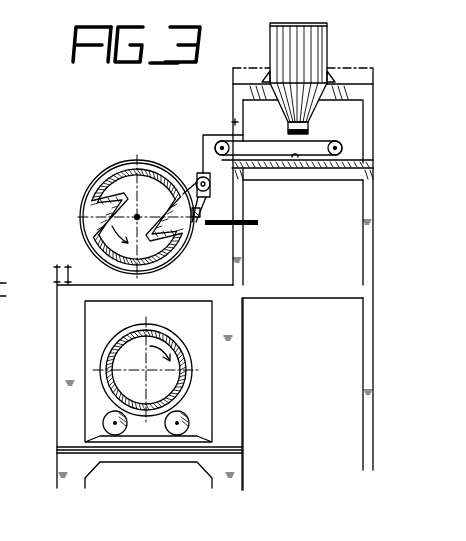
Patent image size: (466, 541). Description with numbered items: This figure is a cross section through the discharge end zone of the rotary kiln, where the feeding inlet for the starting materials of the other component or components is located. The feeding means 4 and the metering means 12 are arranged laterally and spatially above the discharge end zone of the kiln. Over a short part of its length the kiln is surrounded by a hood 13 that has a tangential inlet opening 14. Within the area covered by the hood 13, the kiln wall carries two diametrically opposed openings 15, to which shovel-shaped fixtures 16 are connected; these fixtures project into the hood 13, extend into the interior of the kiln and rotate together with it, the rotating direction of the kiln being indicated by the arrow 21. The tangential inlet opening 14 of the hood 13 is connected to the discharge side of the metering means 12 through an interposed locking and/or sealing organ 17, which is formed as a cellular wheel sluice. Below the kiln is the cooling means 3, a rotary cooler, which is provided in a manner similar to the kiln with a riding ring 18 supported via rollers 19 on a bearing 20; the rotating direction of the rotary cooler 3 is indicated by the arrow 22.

The cooling means 3 is at (105, 353).
The feeding means 4 is at (330, 50).
The metering means 12 is at (319, 142).
The hood 13 is at (117, 163).
The tangential inlet opening 14 is at (199, 224).
The openings 15 is at (104, 198).
The shovel-shaped fixtures 16 is at (93, 245).
The locking and/or sealing organ 17 is at (198, 176).
The riding ring 18 is at (101, 378).
The rollers 19 is at (186, 418).
The bearing 20 is at (152, 443).
The arrow 21 is at (118, 258).
The arrow 22 is at (181, 345).